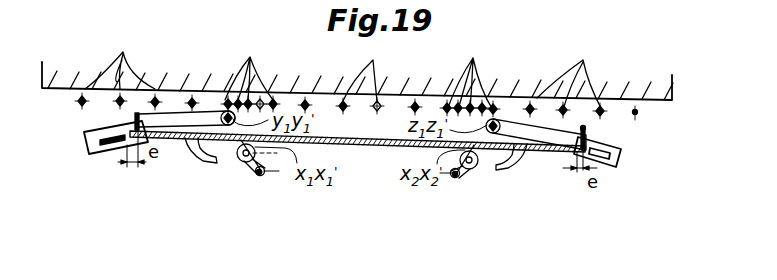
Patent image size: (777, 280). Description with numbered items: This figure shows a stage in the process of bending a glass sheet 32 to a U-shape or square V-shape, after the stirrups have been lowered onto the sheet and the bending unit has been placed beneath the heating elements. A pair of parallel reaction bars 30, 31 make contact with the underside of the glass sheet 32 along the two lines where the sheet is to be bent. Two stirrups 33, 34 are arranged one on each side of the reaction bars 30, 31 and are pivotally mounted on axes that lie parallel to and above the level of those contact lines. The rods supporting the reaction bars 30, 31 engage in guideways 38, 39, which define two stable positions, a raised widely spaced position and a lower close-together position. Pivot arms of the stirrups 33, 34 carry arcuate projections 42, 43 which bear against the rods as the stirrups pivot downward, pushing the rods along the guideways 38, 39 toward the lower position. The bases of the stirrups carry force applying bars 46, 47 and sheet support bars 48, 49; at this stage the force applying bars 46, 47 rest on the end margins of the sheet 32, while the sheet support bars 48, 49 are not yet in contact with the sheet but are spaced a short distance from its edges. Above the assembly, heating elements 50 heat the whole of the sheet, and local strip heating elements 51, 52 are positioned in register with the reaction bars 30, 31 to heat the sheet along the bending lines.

The reaction bar 30 is at (241, 164).
The reaction bar 31 is at (478, 168).
The glass sheet 32 is at (357, 141).
The stirrup 33 is at (91, 133).
The stirrup 34 is at (603, 147).
The guideway 38 is at (256, 177).
The guideway 39 is at (458, 179).
The arcuate projection 42 is at (193, 155).
The arcuate projection 43 is at (519, 168).
The force applying bar 46 is at (134, 117).
The force applying bar 47 is at (586, 131).
The sheet support bar 48 is at (102, 158).
The sheet support bar 49 is at (602, 167).
The heating element 50 is at (353, 71).
The local strip heating element 51 is at (249, 65).
The local strip heating element 52 is at (476, 71).